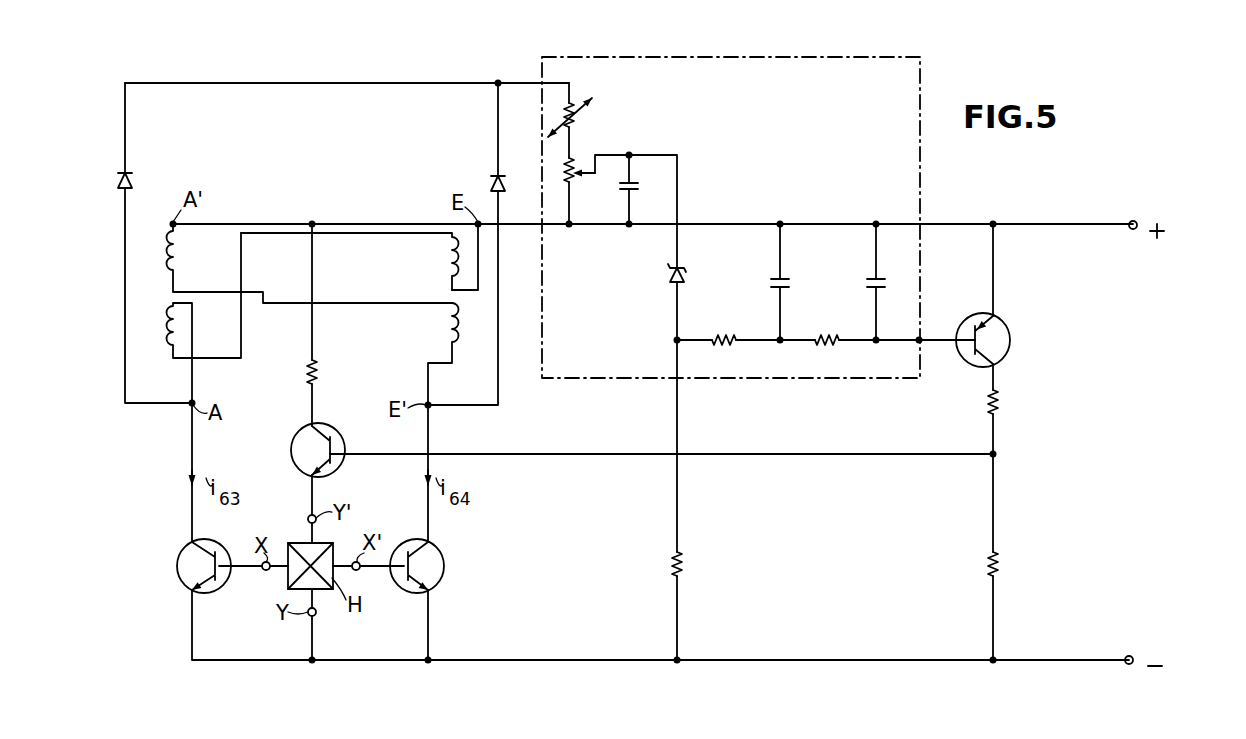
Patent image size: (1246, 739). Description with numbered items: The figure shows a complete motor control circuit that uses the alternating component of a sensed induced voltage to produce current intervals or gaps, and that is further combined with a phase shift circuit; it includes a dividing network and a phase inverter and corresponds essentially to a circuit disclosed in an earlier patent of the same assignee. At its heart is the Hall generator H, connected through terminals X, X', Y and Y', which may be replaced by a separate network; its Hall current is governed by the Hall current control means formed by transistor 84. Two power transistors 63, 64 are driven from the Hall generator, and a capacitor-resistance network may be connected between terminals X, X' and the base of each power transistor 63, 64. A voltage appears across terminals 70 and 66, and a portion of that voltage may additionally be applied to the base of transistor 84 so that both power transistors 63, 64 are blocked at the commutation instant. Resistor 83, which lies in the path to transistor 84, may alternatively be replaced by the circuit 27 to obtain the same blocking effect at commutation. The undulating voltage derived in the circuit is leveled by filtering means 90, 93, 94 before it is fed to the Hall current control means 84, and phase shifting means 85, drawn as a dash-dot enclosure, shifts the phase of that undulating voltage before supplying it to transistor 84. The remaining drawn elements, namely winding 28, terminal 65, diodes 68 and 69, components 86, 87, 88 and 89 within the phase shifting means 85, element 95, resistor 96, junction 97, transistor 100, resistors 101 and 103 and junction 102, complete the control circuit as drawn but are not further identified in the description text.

The circuit 27 is at (405, 234).
The control winding 28 is at (429, 392).
The power transistor 63 is at (178, 561).
The power transistor 64 is at (444, 562).
The negative supply terminal 65 is at (1131, 656).
The terminal 66 is at (1136, 221).
The diode 68 is at (133, 178).
The diode 69 is at (490, 181).
The terminal 70 is at (498, 83).
The resistor 83 is at (318, 374).
The transistor 84 is at (333, 434).
The phase shifting means 85 is at (828, 57).
The potentiometer 86 is at (574, 182).
The variable resistor 87 is at (588, 101).
The capacitor 88 is at (640, 184).
The resistor 89 is at (757, 322).
The filtering means 90 is at (772, 281).
The filtering means 93 is at (831, 337).
The filtering means 94 is at (868, 281).
The zener diode 95 is at (668, 276).
The resistor 96 is at (683, 566).
The junction point 97 is at (920, 343).
The transistor 100 is at (1010, 340).
The resistor 101 is at (999, 405).
The junction point 102 is at (996, 456).
The resistor 103 is at (999, 562).